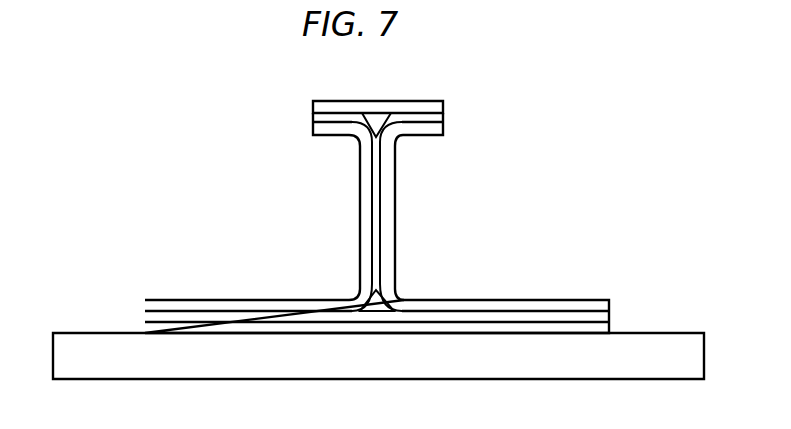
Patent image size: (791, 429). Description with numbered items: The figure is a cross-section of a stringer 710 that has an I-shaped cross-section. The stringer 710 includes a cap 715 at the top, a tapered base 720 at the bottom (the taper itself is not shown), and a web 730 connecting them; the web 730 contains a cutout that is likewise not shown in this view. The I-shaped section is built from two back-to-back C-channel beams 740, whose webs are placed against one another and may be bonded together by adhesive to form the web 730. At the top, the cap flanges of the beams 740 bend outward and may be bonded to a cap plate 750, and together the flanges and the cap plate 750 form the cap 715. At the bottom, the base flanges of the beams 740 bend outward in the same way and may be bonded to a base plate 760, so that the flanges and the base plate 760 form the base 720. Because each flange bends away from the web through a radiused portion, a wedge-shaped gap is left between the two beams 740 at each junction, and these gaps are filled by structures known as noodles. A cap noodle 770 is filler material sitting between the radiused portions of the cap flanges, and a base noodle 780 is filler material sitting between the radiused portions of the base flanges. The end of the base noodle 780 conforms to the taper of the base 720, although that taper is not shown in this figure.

The stringer 710 is at (157, 135).
The cap 715 is at (312, 100).
The tapered base 720 is at (142, 296).
The web 730 is at (359, 175).
The C-channel beams 740 is at (359, 228).
The cap plate 750 is at (432, 101).
The base plate 760 is at (609, 323).
The cap noodle 770 is at (388, 125).
The base noodle 780 is at (381, 303).